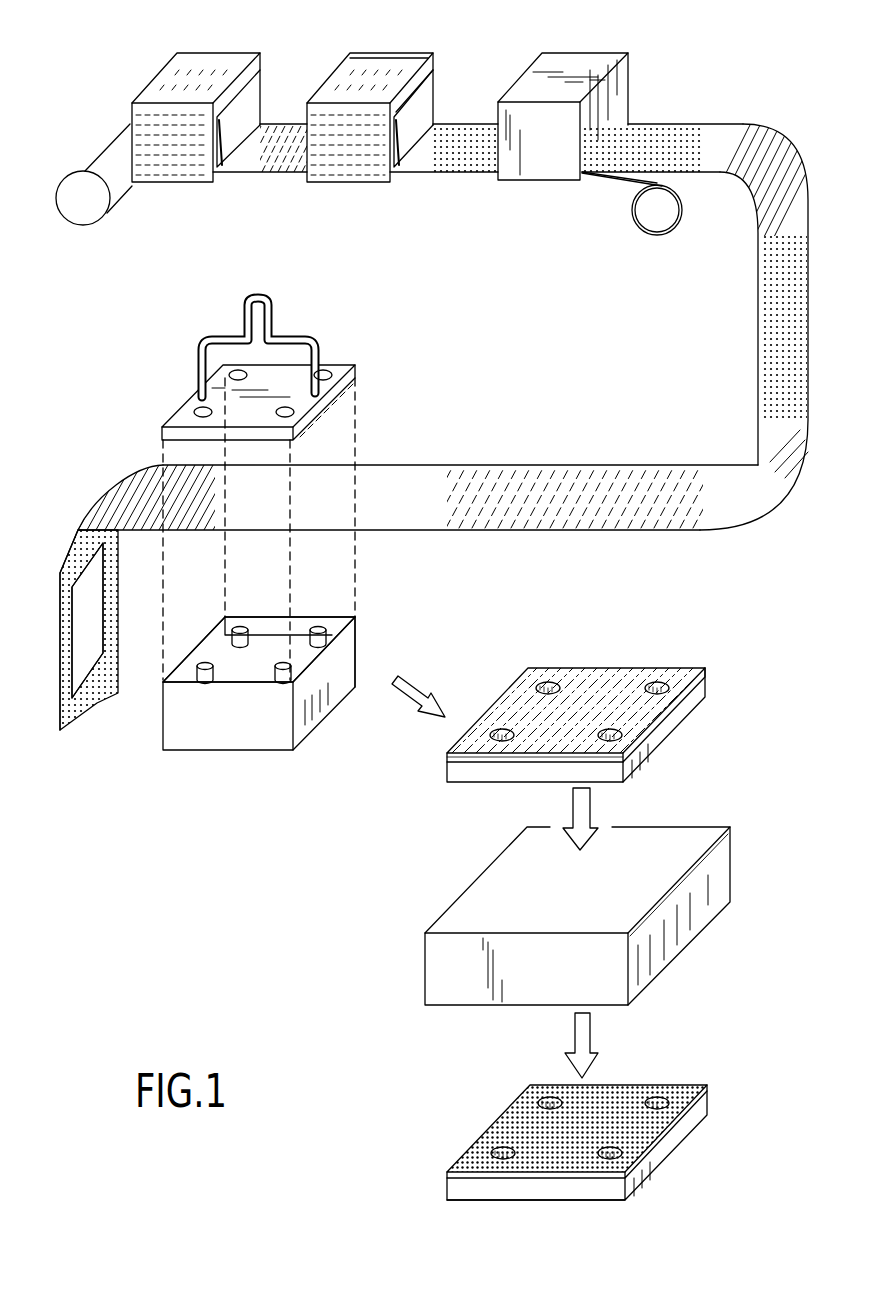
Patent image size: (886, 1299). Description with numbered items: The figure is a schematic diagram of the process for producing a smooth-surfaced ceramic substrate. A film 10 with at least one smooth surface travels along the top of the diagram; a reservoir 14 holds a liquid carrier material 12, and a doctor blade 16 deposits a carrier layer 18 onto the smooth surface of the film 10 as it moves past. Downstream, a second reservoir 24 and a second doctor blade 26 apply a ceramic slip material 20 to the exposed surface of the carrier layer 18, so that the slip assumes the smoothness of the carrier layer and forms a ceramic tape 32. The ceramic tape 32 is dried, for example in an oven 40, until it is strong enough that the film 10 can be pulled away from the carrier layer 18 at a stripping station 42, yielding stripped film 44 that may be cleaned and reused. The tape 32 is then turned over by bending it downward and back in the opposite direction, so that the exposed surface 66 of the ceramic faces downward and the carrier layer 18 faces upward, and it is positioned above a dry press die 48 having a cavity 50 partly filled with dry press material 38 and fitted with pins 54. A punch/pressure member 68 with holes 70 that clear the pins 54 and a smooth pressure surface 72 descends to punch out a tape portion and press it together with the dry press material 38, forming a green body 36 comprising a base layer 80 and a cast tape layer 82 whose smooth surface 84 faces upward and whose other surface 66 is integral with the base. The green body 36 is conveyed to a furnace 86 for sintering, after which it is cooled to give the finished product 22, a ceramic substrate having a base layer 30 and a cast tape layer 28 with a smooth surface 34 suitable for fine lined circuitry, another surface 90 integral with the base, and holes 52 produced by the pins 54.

The film 10 is at (105, 148).
The carrier material 12 is at (273, 132).
The reservoir 14 is at (160, 68).
The doctor blade 16 is at (213, 140).
The carrier layer 18 is at (340, 70).
The ceramic slip material 20 is at (427, 50).
The finished product 22 is at (539, 1142).
The second reservoir 24 is at (360, 62).
The second doctor blade 26 is at (388, 145).
The cast tape layer 28 is at (682, 1117).
The base layer 30 is at (672, 1143).
The ceramic tape 32 is at (463, 155).
The smooth surface 34 is at (515, 1128).
The green body 36 is at (577, 761).
The dry press material 38 is at (257, 670).
The oven 40 is at (600, 62).
The stripping station 42 is at (650, 181).
The stripped film 44 is at (653, 240).
The dry press die 48 is at (338, 657).
The cavity 50 is at (208, 628).
The holes 52 is at (657, 683).
The pins 54 is at (318, 632).
The exposed surface 66 is at (665, 140).
The punch/pressure member 68 is at (262, 323).
The holes 70 is at (237, 372).
The pressure surface 72 is at (313, 417).
The base layer 80 is at (486, 766).
The cast tape layer 82 is at (668, 707).
The smooth surface 84 is at (492, 778).
The furnace 86 is at (445, 915).
The other surface 90 is at (647, 1160).